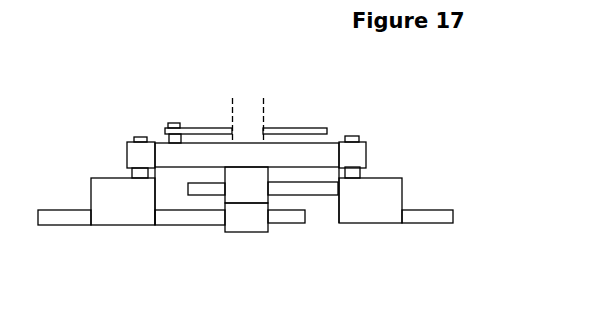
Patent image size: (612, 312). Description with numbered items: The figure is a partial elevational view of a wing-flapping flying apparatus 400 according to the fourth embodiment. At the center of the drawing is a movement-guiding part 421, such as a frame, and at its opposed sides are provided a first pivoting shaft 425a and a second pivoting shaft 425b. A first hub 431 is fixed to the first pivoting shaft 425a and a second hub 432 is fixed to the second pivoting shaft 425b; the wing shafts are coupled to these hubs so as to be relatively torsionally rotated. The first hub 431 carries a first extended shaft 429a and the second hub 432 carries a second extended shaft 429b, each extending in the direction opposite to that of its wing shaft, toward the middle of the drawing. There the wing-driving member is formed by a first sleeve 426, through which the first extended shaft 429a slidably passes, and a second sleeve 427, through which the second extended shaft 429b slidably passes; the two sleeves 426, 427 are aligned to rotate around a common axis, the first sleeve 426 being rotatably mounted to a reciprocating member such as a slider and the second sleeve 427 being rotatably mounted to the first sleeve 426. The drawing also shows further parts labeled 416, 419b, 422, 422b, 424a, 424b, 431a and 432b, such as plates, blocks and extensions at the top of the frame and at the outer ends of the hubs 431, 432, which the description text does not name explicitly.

The wing-flapping flying apparatus 400 is at (457, 70).
The plate 416 is at (305, 129).
The optical axis / light path 419b is at (248, 112).
The movement-guiding part 421 is at (332, 148).
The plate 422 is at (168, 140).
The fastening bolt 422b is at (173, 123).
The right end block 424a is at (358, 152).
The left end block 424b is at (130, 155).
The first pivoting shaft 425a is at (360, 172).
The second pivoting shaft 425b is at (137, 177).
The first sleeve 426 is at (258, 190).
The second sleeve 427 is at (242, 232).
The first extended shaft 429a is at (320, 190).
The second extended shaft 429b is at (190, 218).
The first hub 431 is at (365, 217).
The right base extension 431a is at (428, 220).
The second hub 432 is at (108, 215).
The left base extension 432b is at (58, 220).